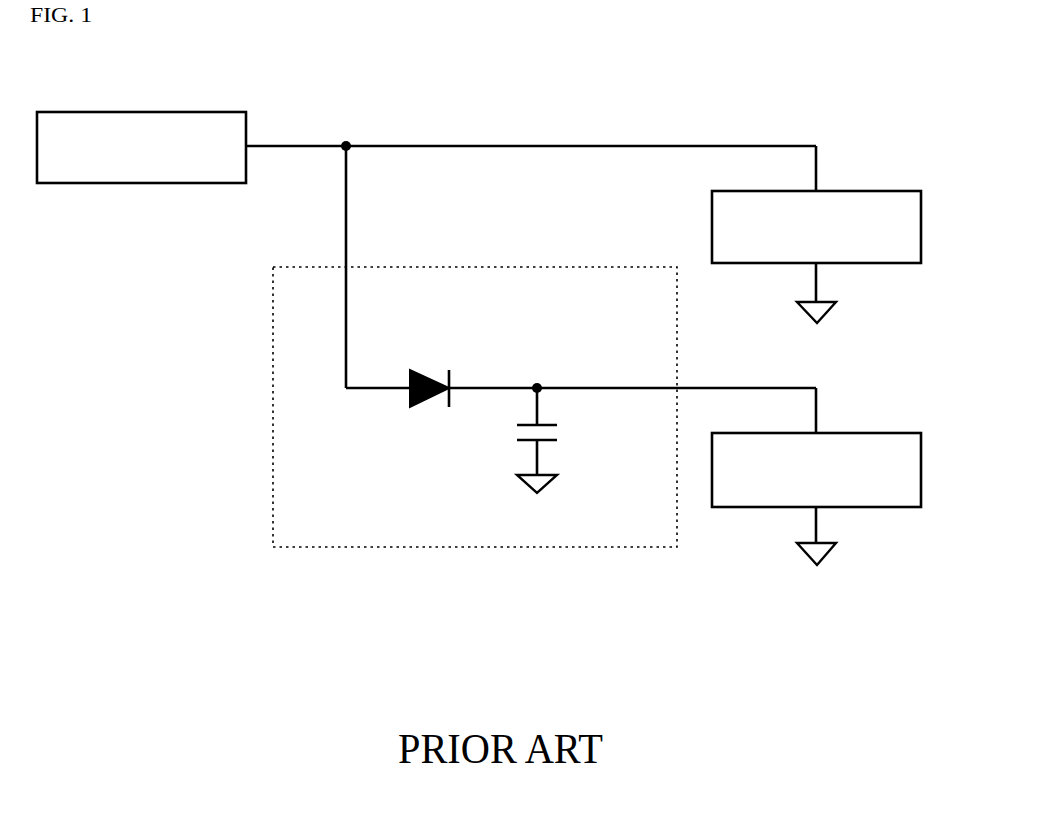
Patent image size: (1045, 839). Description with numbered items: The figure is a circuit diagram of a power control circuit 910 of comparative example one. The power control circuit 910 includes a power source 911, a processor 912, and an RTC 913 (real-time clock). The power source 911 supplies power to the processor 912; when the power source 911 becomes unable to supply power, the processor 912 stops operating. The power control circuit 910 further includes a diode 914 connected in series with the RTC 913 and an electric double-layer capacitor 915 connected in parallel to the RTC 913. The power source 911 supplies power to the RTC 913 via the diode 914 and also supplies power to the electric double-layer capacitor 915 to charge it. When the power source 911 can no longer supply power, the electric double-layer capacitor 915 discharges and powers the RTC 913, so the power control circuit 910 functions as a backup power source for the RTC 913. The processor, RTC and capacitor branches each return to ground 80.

The power source 911 is at (115, 112).
The processor 912 is at (860, 191).
The RTC (real-time clock) 913 is at (860, 433).
The power control circuit 910 is at (513, 267).
The diode 914 is at (434, 376).
The electric double-layer capacitor 915 is at (527, 432).
The ground 80 is at (823, 312).